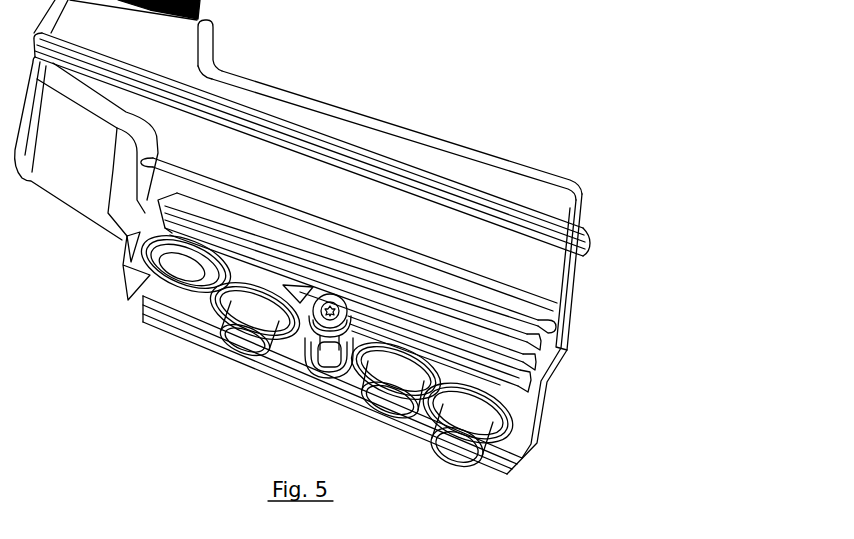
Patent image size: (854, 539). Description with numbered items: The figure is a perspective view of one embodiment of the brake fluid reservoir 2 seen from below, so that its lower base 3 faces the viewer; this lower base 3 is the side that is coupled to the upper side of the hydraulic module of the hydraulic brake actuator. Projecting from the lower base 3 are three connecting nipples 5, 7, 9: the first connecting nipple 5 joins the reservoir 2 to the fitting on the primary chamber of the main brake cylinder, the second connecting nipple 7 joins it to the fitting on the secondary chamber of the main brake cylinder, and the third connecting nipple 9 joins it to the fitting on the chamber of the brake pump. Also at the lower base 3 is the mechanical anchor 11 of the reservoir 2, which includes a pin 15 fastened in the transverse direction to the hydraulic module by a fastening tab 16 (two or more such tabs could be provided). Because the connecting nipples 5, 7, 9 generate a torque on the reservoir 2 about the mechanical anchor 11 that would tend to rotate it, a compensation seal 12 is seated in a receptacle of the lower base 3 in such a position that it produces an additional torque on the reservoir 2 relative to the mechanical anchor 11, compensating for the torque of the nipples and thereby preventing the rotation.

The brake fluid reservoir 2 is at (483, 52).
The lower base 3 is at (518, 410).
The first connecting nipple 5 is at (390, 398).
The second connecting nipple 7 is at (208, 342).
The third connecting nipple 9 is at (458, 440).
The mechanical anchor 11 is at (356, 299).
The compensation seal 12 is at (123, 278).
The pin 15 is at (333, 309).
The fastening tab 16 is at (310, 350).